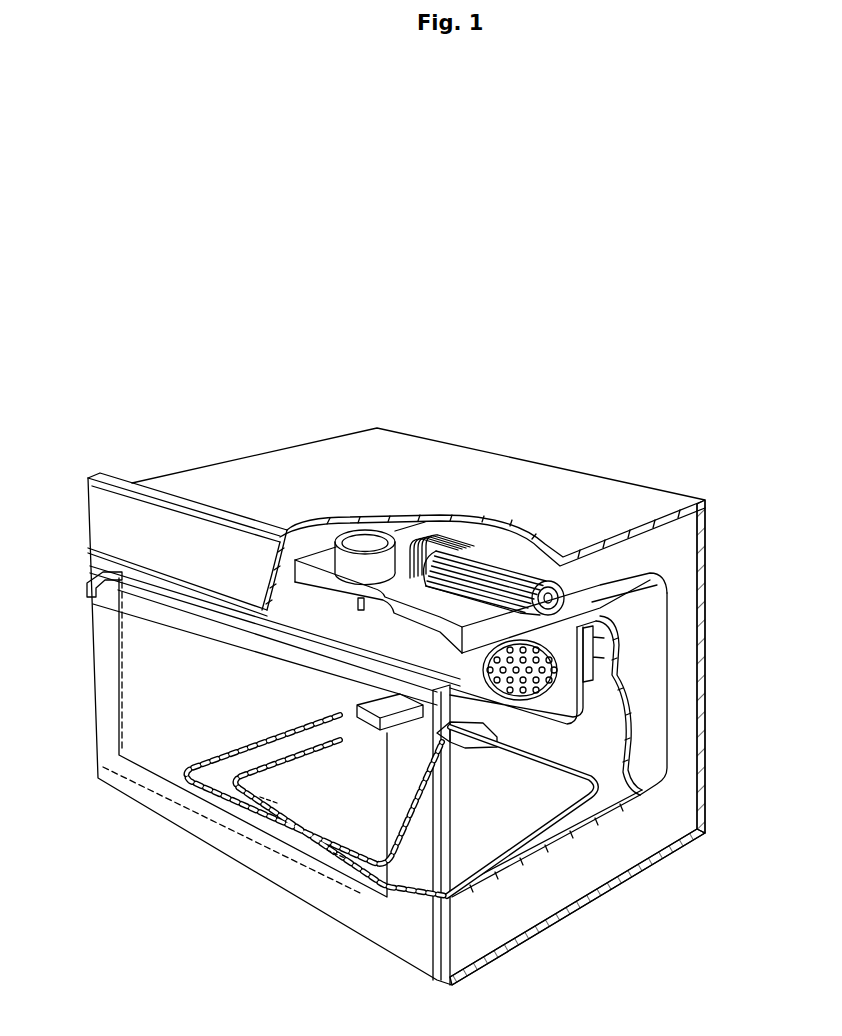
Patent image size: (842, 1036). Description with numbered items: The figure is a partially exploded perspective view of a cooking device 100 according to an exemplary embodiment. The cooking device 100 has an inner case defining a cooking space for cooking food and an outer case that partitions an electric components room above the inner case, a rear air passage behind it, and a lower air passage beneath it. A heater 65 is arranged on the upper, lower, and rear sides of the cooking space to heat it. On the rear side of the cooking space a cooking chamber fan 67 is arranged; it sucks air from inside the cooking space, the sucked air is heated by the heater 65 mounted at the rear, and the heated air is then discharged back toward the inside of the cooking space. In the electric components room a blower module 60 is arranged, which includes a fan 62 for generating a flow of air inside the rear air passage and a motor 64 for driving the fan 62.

The cooking device 100 is at (95, 410).
The blower module 60 is at (508, 367).
The fan 62 is at (478, 563).
The motor 64 is at (424, 553).
The heater 65 is at (522, 833).
The cooking chamber fan 67 is at (548, 673).